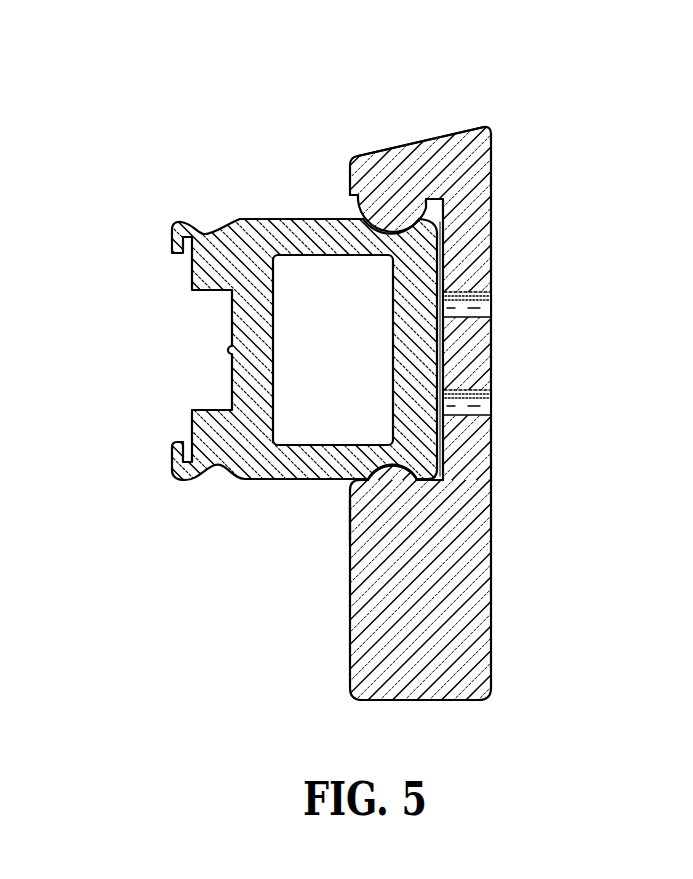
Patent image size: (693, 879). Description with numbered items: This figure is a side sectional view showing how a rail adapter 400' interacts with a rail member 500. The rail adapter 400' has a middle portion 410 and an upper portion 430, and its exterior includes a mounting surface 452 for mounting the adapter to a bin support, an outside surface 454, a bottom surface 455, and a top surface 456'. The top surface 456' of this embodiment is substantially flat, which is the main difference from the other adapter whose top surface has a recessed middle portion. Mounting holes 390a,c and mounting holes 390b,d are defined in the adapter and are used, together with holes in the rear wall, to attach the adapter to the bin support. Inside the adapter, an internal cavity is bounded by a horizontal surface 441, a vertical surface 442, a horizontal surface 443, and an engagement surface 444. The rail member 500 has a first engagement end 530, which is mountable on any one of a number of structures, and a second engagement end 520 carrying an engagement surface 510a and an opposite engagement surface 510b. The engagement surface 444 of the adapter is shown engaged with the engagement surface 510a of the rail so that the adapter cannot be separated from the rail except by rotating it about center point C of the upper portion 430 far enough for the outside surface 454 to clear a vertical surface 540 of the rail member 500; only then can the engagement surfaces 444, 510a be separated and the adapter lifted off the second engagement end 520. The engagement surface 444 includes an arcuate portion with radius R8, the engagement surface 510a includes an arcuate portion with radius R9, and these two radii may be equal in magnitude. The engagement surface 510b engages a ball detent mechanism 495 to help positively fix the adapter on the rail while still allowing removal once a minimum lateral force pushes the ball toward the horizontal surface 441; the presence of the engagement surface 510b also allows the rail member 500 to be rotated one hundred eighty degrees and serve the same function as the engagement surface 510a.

The rail adapter 400' is at (346, 398).
The top surface 456' is at (428, 132).
The upper portion 430 is at (405, 160).
The middle portion 410 is at (452, 323).
The engagement surface 510a is at (385, 226).
The horizontal surface 443 is at (436, 205).
The vertical surface 442 is at (436, 388).
The center point C is at (407, 193).
The radius R8 is at (443, 283).
The mounting holes 390a,c is at (463, 305).
The mounting holes 390b,d is at (465, 408).
The vertical surface 540 is at (446, 425).
The mounting surface 452 is at (495, 567).
The outside surface 454 is at (347, 524).
The bottom surface 455 is at (418, 705).
The engagement surface 510b is at (393, 482).
The rail member 500 is at (207, 272).
The engagement surface 444 is at (385, 238).
The radius R9 is at (395, 233).
The second engagement end 520 is at (420, 433).
The first engagement end 530 is at (225, 448).
The horizontal surface 441 is at (358, 465).
The ball detent mechanism 495 is at (385, 468).